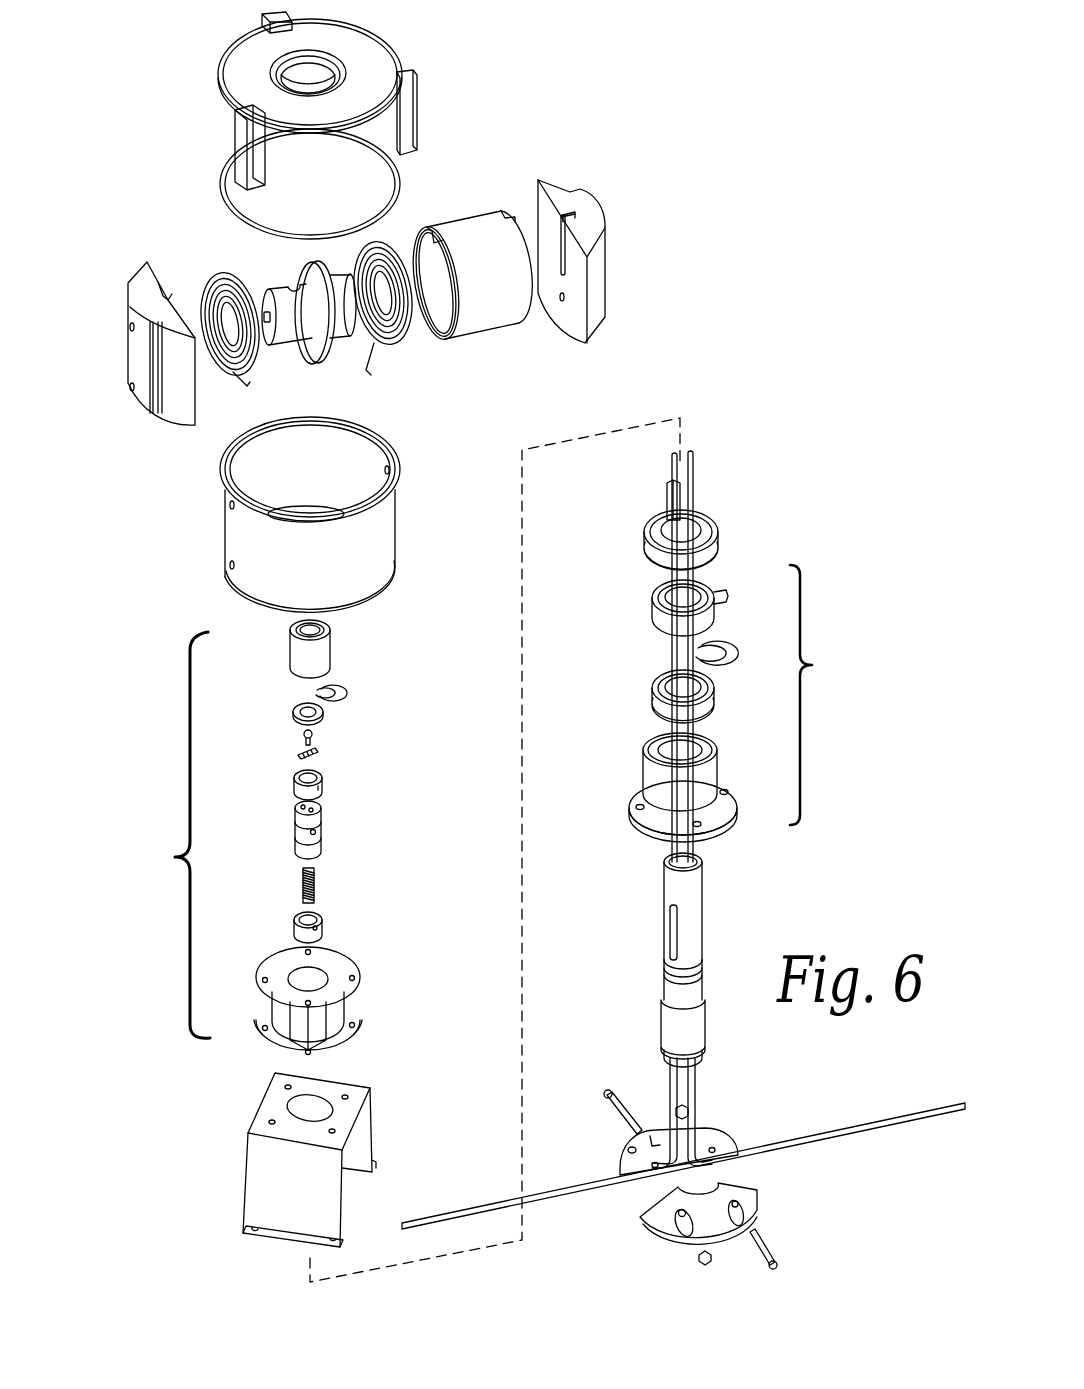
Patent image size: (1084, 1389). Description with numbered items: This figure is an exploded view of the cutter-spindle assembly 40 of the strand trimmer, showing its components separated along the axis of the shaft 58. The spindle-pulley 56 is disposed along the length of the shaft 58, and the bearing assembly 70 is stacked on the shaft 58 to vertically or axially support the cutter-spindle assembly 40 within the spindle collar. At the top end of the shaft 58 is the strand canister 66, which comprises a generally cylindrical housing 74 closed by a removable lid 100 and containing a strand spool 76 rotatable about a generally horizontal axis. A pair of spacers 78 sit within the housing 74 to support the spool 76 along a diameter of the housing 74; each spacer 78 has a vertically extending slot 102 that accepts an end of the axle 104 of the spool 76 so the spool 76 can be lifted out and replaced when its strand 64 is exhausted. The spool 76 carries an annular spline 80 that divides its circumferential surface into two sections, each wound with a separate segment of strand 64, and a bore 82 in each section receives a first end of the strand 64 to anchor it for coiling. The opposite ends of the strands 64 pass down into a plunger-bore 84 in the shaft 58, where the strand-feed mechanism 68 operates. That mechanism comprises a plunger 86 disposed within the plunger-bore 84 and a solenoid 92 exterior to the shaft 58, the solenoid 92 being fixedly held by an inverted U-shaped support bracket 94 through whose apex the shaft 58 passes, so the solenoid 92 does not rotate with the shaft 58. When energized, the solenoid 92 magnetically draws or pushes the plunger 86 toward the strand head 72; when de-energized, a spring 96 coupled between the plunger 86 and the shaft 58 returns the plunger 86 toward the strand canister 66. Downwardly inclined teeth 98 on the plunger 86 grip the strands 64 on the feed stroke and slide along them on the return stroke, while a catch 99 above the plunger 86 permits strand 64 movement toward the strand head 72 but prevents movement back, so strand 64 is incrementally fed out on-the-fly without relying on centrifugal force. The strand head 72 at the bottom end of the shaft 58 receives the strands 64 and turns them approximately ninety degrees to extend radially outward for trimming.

The cutter-spindle assembly 40 is at (758, 326).
The spindle-pulley 56 is at (718, 548).
The shaft 58 is at (664, 920).
The strand 64 is at (232, 385).
The strand canister 66 is at (172, 530).
The strand-feed mechanism 68 is at (169, 835).
The bearing assembly 70 is at (757, 695).
The strand head 72 is at (725, 1140).
The housing 74 is at (395, 530).
The strand spool 76 is at (293, 337).
The spacers 78 is at (128, 298).
The annular spline 80 is at (304, 262).
The bore 82 is at (284, 288).
The plunger-bore 84 is at (728, 838).
The plunger 86 is at (324, 830).
The solenoid 92 is at (336, 1020).
The support bracket 94 is at (248, 1180).
The spring 96 is at (314, 878).
The teeth 98 is at (320, 752).
The catch 99 is at (298, 695).
The lid 100 is at (388, 47).
The slot 102 is at (160, 285).
The axle 104 is at (267, 324).